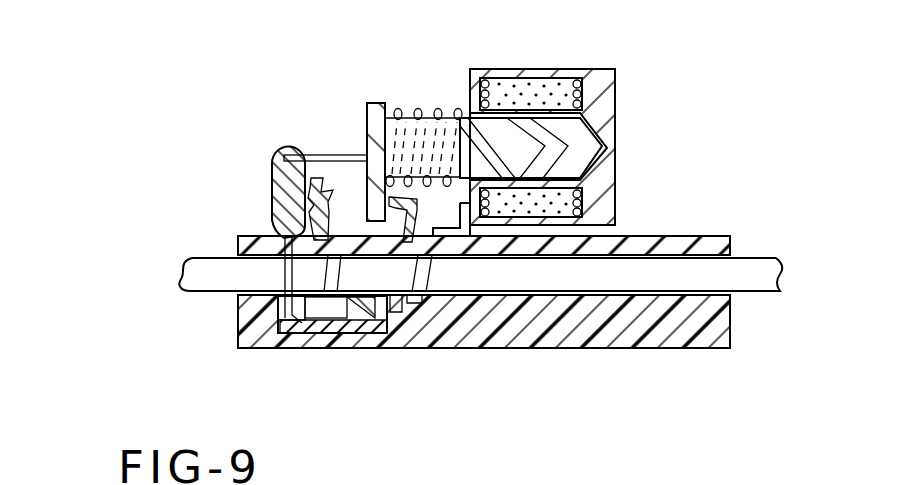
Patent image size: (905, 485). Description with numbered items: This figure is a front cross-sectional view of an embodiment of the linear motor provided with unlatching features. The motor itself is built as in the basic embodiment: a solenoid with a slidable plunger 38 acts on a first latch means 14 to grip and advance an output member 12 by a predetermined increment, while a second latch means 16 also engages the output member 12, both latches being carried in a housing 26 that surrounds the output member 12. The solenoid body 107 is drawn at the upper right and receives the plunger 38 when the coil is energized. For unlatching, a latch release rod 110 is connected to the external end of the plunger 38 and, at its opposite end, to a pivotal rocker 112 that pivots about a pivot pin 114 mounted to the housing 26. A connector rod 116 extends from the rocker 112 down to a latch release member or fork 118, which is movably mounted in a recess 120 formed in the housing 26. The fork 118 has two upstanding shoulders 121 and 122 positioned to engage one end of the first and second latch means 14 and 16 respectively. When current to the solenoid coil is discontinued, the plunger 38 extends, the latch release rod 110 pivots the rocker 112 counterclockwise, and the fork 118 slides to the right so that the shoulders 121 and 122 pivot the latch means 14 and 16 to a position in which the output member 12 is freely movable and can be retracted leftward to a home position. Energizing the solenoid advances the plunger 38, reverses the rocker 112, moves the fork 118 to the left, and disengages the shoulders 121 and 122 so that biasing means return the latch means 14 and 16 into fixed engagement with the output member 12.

The output member 12 is at (743, 267).
The first latch means 14 is at (433, 247).
The second latch means 16 is at (331, 198).
The housing 26 is at (643, 343).
The plunger 38 is at (503, 125).
The solenoid housing 107 is at (650, 37).
The latch release rod 110 is at (314, 156).
The pivotal rocker 112 is at (273, 167).
The pivot pin 114 is at (272, 205).
The connector rod 116 is at (277, 275).
The latch release member 118 is at (290, 343).
The recess 120 is at (410, 330).
The upstanding shoulder 121 is at (348, 330).
The upstanding shoulder 122 is at (240, 313).